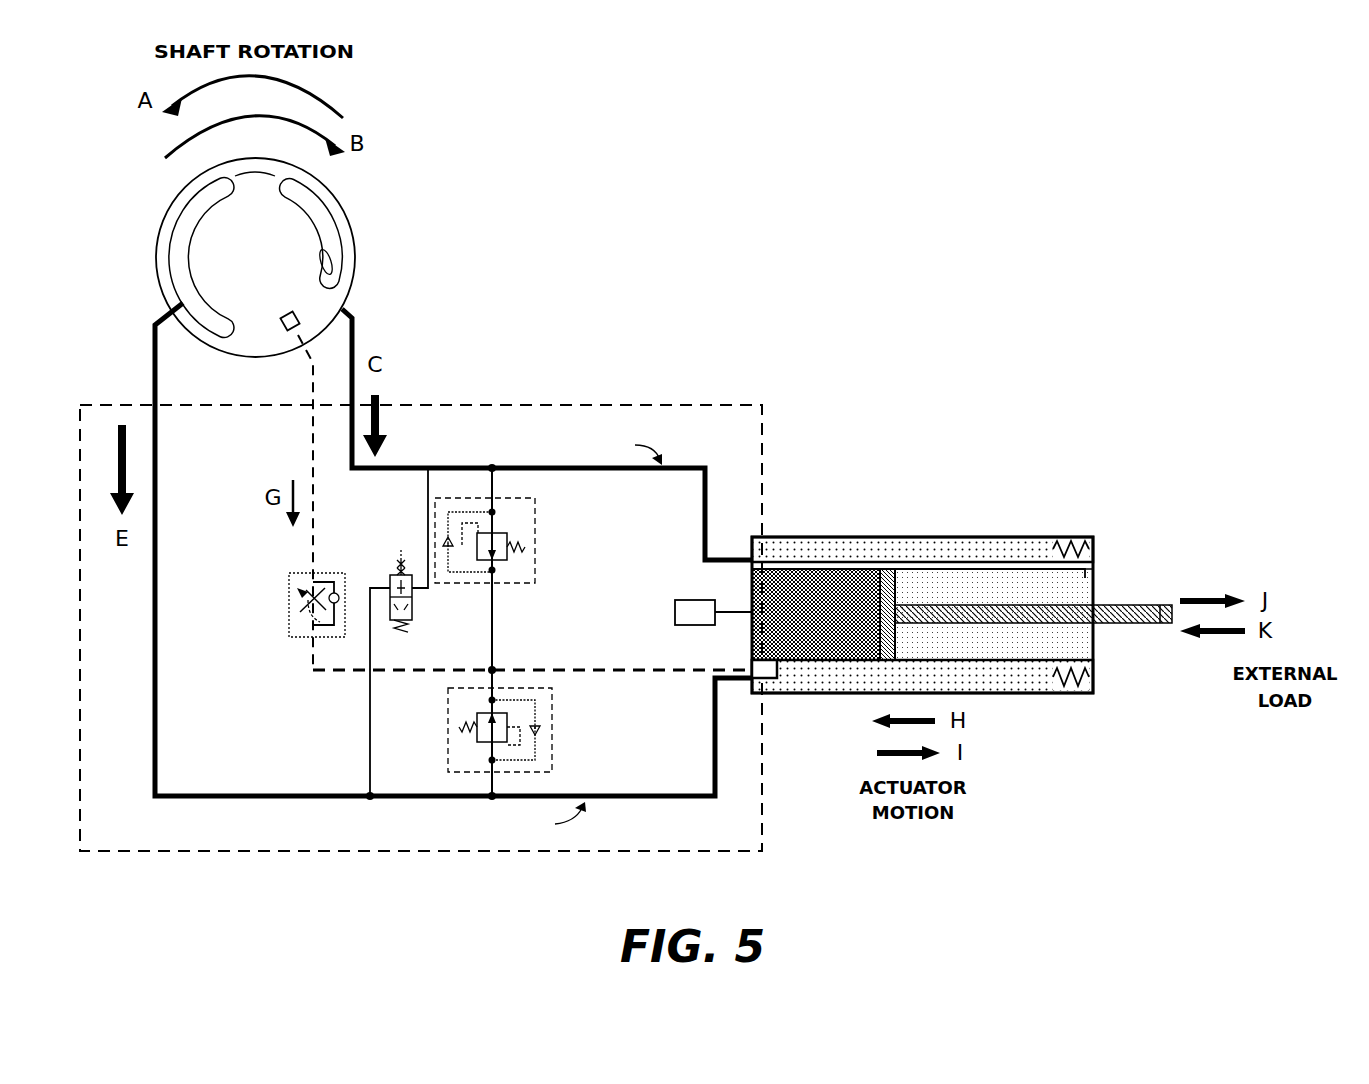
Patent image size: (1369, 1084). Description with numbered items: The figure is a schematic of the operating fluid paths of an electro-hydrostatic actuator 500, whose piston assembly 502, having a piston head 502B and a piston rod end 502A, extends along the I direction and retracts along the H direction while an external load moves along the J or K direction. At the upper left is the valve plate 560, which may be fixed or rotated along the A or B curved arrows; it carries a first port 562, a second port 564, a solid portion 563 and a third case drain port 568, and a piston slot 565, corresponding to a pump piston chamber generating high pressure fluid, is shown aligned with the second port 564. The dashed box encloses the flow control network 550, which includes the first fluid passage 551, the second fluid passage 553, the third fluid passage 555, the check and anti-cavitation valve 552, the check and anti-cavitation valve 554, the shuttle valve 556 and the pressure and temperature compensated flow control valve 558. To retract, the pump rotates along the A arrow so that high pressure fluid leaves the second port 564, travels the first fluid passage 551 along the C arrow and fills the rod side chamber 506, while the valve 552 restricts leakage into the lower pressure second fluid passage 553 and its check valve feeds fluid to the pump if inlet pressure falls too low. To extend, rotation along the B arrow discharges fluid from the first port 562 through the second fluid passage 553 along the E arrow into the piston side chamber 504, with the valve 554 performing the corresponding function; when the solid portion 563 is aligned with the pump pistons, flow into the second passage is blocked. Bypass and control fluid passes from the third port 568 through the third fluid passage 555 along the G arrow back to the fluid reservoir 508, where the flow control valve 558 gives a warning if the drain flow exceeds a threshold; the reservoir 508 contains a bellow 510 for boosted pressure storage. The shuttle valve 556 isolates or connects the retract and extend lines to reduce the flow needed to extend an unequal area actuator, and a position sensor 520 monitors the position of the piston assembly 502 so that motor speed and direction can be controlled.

The electro-hydrostatic actuator 500 is at (965, 165).
The piston assembly 502 is at (1117, 593).
The piston rod end 502A is at (1165, 605).
The piston head 502B is at (887, 575).
The piston side chamber 504 is at (850, 650).
The rod side chamber 506 is at (970, 585).
The fluid reservoir 508 is at (805, 548).
The bellow 510 is at (1068, 540).
The position sensor 520 is at (672, 608).
The flow control network 550 is at (540, 405).
The first fluid passage 551 is at (678, 466).
The check and anti-cavitation valve 552 is at (535, 525).
The second fluid passage 553 is at (670, 796).
The check and anti-cavitation valve 554 is at (552, 750).
The third fluid passage 555 is at (595, 675).
The shuttle valve 556 is at (412, 612).
The pressure and temperature compensated flow control valve 558 is at (288, 600).
The valve plate 560 is at (355, 250).
The first port 562 is at (185, 223).
The solid portion 563 is at (253, 182).
The second port 564 is at (307, 203).
The piston slot 565 is at (332, 270).
The third port 568 is at (300, 322).